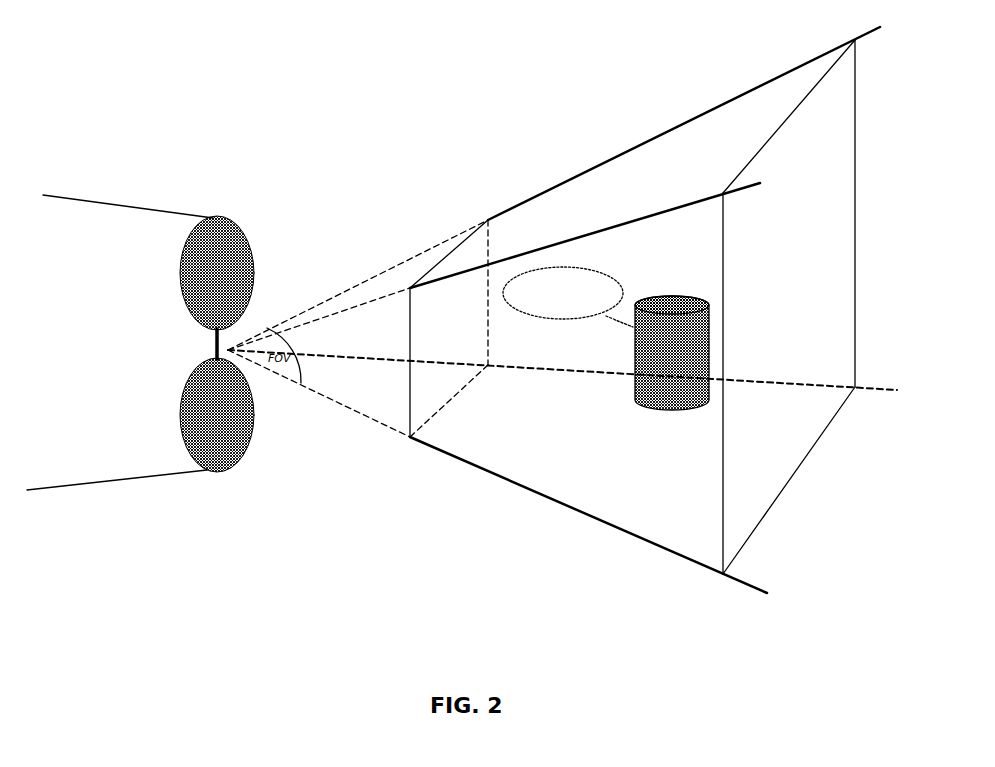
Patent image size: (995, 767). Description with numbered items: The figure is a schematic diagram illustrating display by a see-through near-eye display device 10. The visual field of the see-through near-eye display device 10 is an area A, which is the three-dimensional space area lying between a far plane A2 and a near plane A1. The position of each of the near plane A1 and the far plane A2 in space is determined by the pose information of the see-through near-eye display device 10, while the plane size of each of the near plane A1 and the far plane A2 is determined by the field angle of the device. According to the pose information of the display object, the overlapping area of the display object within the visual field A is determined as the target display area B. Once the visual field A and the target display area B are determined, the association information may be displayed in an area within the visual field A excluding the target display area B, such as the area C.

The see-through near-eye display device 10 is at (78, 200).
The area (visual field) A is at (570, 487).
The near plane A1 is at (420, 414).
The far plane A2 is at (733, 543).
The target display area B is at (670, 310).
The area for association information C is at (510, 280).